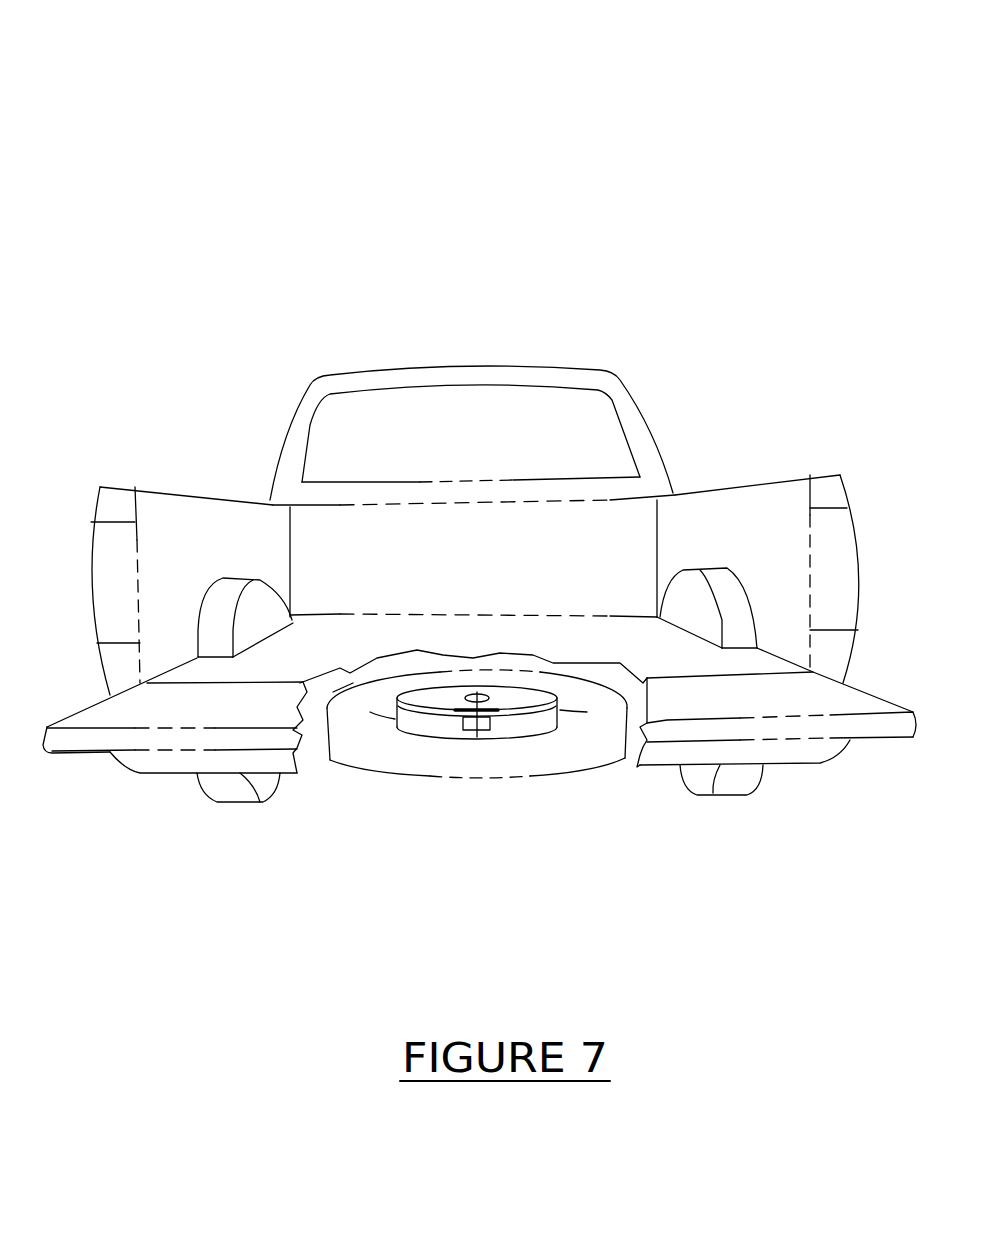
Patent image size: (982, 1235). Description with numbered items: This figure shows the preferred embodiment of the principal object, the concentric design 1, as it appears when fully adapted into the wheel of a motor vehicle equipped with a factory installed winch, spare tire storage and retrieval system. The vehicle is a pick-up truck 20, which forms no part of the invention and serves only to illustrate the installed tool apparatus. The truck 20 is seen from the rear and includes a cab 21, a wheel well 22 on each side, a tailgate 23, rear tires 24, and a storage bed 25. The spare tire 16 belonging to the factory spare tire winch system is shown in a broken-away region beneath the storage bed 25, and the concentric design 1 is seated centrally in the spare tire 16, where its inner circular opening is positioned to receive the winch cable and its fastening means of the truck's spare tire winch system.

The concentric design 1 is at (443, 687).
The spare tire 16 is at (590, 668).
The truck 20 is at (430, 366).
The cab 21 is at (600, 373).
The wheel well 22 is at (735, 567).
The tailgate 23 is at (883, 740).
The rear tires 24 is at (271, 800).
The storage bed 25 is at (375, 550).